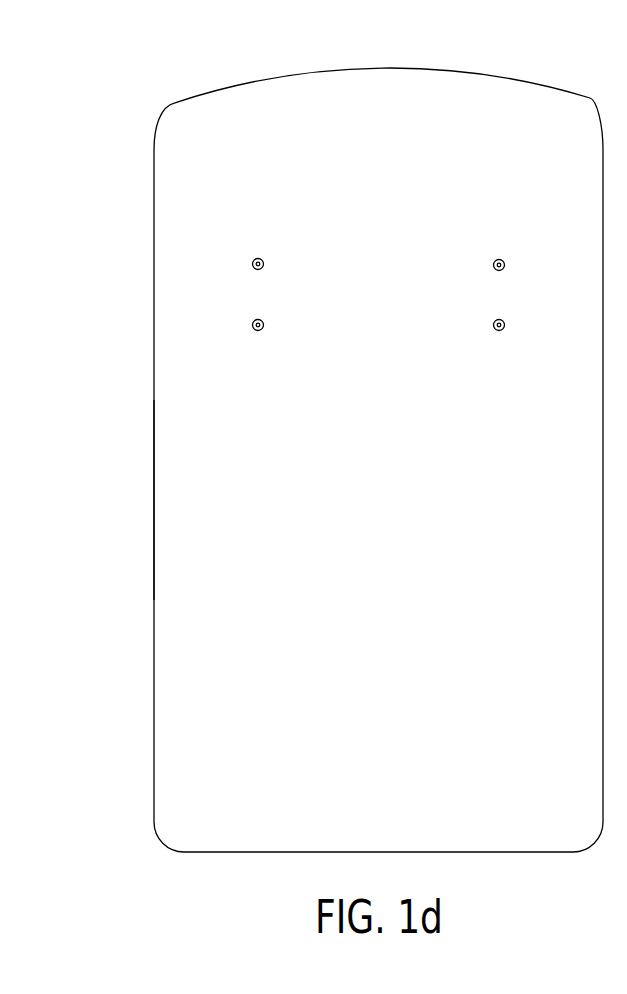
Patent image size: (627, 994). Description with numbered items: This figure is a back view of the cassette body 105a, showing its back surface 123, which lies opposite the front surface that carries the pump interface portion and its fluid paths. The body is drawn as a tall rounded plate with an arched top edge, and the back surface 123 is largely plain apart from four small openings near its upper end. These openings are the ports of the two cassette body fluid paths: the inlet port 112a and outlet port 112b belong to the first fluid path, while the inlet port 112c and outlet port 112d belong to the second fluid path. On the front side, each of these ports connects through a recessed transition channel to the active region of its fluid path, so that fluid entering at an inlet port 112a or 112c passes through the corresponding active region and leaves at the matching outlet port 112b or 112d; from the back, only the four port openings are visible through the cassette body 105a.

The cassette body 105a is at (208, 93).
The inlet port 112a is at (253, 262).
The outlet port 112b is at (505, 262).
The inlet port 112c is at (505, 322).
The outlet port 112d is at (253, 322).
The back surface 123 is at (170, 485).